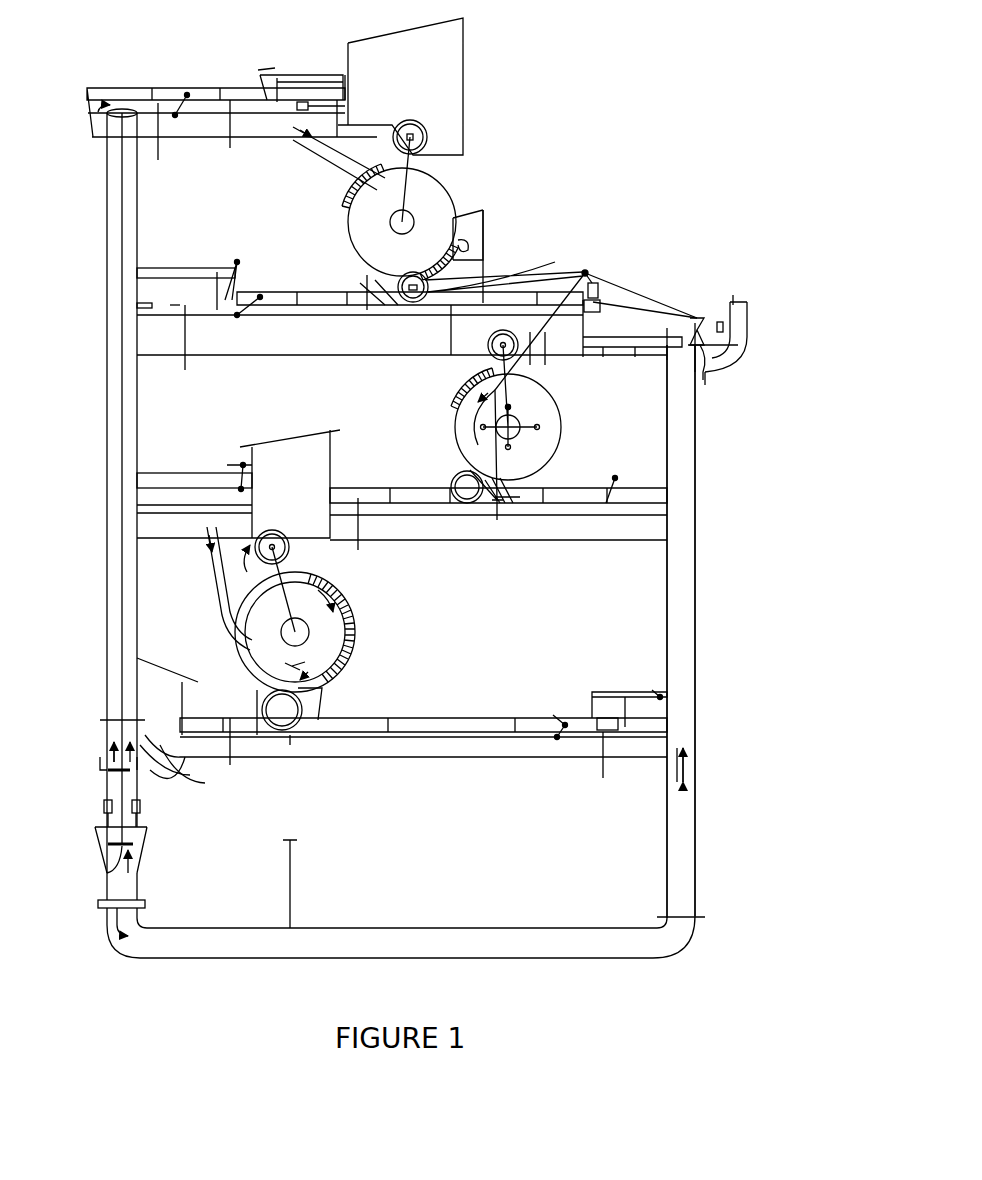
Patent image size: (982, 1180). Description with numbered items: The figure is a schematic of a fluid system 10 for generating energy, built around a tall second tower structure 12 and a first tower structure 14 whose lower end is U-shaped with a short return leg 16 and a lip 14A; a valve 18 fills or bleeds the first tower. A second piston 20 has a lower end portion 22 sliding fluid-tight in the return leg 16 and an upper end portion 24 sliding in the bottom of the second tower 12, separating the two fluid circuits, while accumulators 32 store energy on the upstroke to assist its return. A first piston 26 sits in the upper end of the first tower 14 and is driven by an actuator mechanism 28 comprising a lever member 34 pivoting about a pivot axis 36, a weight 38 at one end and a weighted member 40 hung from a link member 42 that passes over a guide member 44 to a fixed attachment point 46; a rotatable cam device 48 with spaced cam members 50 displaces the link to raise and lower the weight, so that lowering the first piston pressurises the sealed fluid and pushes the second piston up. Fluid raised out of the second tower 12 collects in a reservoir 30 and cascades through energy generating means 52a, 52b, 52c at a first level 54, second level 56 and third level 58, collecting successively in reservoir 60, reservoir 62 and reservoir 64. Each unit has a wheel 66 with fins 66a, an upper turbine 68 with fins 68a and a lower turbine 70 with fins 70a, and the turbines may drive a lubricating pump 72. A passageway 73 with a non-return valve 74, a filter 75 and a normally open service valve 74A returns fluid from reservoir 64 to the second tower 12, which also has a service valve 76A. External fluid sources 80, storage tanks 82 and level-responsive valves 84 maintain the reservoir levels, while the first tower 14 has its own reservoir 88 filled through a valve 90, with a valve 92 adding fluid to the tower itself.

The fluid system 10 is at (556, 124).
The second tower structure 12 is at (107, 510).
The first tower structure 14 is at (695, 600).
The housing lip 14A is at (657, 917).
The return leg 16 is at (107, 918).
The valve 18 is at (295, 840).
The second piston 20 is at (123, 790).
The lower end portion 22 is at (107, 844).
The upper end portion 24 is at (108, 770).
The first piston 26 is at (110, 872).
The actuator mechanism 28 is at (641, 262).
The reservoir 30 is at (195, 138).
The accumulators 32 is at (104, 806).
The lever member 34 is at (627, 306).
The pivot axis 36 is at (697, 318).
The weight 38 is at (708, 372).
The weighted member 40 is at (598, 310).
The link member 42 is at (615, 285).
The guide member 44 is at (585, 270).
The fixed attachment point 46 is at (107, 730).
The cam device 48 is at (580, 428).
The cam members 50 is at (260, 294).
The energy generating means 52a is at (500, 193).
The energy generating means 52b is at (432, 399).
The energy generating means 52c is at (372, 638).
The first level 54 is at (262, 192).
The second level 56 is at (235, 394).
The third level 58 is at (555, 612).
The reservoir 60 is at (360, 350).
The reservoir 62 is at (450, 540).
The reservoir 64 is at (515, 757).
The wheel 66 is at (352, 230).
The fins 66a is at (365, 188).
The turbine 68 is at (420, 124).
The fins 68a is at (430, 128).
The turbine 70 is at (430, 283).
The fins 70a is at (432, 302).
The pump 72 is at (425, 148).
The passageway 73 is at (160, 752).
The valve 74 is at (143, 762).
The service valve 74A is at (250, 784).
The filter 75 is at (163, 766).
The service valve 76A is at (107, 718).
The external fluid source 80 is at (187, 95).
The storage means 82 is at (320, 78).
The valve 84 is at (333, 104).
The reservoir 88 is at (720, 345).
The valve 90 is at (733, 300).
The valve 92 is at (706, 380).